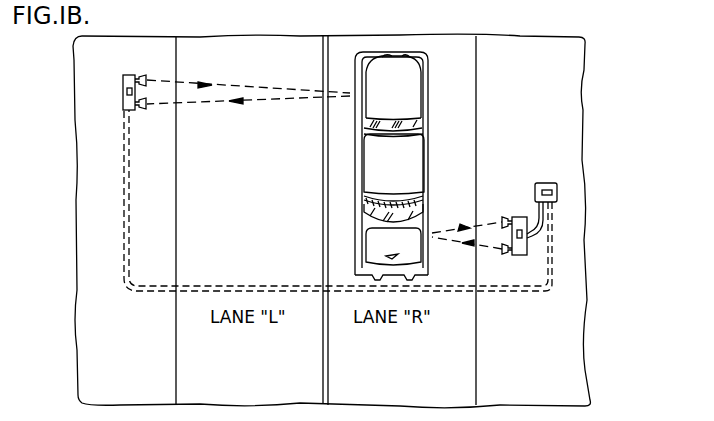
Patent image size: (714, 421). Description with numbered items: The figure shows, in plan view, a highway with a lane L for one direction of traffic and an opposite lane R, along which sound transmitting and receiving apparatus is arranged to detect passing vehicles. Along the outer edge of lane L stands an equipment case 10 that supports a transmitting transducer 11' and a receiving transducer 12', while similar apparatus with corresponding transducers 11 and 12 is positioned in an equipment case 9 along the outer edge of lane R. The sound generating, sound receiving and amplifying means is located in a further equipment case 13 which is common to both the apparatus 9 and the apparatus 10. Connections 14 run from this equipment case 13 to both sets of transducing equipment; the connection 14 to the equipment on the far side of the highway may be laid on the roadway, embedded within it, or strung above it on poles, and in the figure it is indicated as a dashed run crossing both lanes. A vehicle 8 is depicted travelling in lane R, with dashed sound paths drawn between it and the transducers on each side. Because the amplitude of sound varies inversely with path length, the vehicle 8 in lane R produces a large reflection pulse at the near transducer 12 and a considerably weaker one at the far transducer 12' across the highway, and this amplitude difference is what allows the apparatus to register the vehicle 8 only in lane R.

The vehicle 8 is at (430, 168).
The equipment case 9 is at (518, 217).
The equipment case 10 is at (123, 98).
The transmitting transducer 11 is at (510, 263).
The receiving transducer 12 is at (497, 210).
The transmitting transducer 11' is at (148, 67).
The receiving transducer 12' is at (151, 121).
The equipment case 13 is at (548, 183).
The connections 14 is at (546, 212).